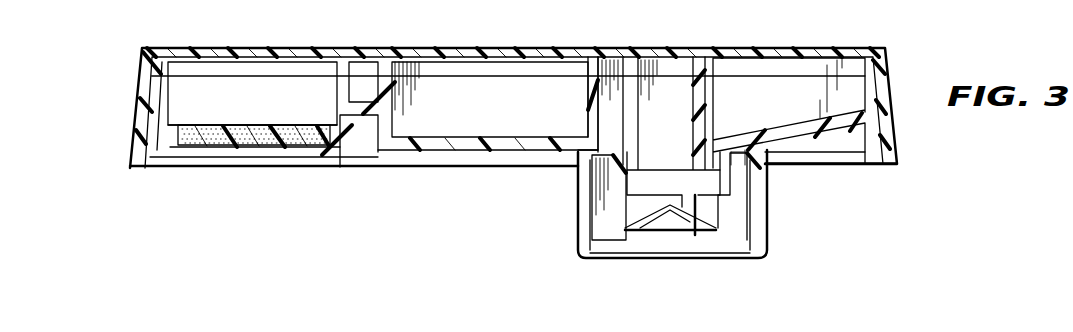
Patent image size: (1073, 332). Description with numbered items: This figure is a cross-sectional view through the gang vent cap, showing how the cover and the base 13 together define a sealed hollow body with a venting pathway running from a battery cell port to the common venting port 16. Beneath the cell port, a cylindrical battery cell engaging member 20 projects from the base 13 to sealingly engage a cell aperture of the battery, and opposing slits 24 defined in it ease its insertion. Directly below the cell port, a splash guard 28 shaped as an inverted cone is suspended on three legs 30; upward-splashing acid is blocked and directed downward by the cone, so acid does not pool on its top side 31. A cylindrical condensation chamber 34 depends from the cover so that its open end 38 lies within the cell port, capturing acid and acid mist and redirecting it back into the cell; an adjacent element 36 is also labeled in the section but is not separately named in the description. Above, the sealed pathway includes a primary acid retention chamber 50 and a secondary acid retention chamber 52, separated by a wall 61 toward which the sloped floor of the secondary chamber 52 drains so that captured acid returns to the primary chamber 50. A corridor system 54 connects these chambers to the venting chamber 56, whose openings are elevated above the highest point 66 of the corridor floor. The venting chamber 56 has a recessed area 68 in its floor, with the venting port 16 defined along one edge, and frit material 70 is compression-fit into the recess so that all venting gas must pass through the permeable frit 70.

The base 13 is at (840, 125).
The venting port 16 is at (169, 157).
The battery cell engaging member 20 is at (760, 183).
The slits 24 is at (783, 270).
The splash guard 28 is at (650, 215).
The legs 30 is at (702, 203).
The top side 31 is at (663, 208).
The condensation chamber 34 is at (672, 72).
The partition wall 36 is at (558, 45).
The open end 38 is at (685, 170).
The primary acid retention chamber 50 is at (797, 77).
The secondary acid retention chamber 52 is at (490, 85).
The corridor system 54 is at (363, 70).
The venting chamber 56 is at (283, 90).
The wall 61 is at (588, 97).
The highest point 66 is at (373, 95).
The recessed area 68 is at (290, 142).
The frit material 70 is at (247, 97).